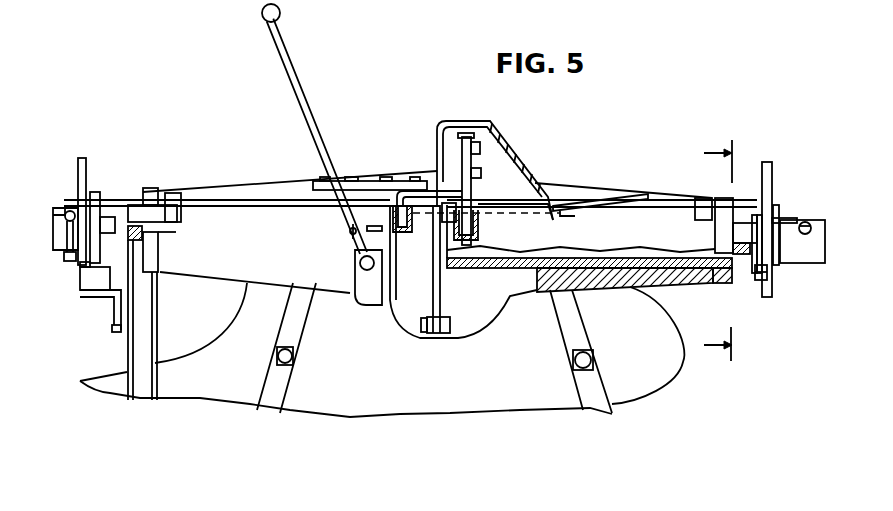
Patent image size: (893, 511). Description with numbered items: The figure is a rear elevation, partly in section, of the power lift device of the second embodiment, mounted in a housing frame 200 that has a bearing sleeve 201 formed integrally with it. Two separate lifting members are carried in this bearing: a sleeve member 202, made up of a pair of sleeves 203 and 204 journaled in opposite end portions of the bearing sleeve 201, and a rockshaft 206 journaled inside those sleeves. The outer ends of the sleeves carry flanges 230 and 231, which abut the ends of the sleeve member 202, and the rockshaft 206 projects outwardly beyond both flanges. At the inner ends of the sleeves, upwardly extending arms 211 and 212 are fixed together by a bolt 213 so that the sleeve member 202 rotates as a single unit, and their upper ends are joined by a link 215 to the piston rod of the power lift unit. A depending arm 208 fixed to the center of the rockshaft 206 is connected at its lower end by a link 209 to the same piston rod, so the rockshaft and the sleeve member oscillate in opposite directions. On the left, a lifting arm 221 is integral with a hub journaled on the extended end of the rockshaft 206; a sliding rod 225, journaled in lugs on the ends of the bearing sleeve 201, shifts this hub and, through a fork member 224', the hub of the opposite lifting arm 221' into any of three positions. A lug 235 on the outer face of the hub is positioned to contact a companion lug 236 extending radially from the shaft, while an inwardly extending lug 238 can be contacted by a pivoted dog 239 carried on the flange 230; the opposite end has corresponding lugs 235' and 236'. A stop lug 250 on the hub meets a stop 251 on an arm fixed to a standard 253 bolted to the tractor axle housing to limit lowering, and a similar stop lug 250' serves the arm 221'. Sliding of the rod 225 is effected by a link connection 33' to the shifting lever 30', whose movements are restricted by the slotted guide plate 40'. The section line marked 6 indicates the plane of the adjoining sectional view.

The shifting lever 30' is at (322, 154).
The guide plate 40' is at (370, 166).
The bearing sleeve 201 is at (246, 186).
The sliding rod 225 is at (231, 208).
The link 215 is at (452, 124).
The upwardly extending arm 211 is at (465, 135).
The upwardly extending arm 212 is at (471, 160).
The bolt 213 is at (482, 173).
The sleeve 203 is at (402, 252).
The sleeve member 202 is at (510, 199).
The link connection 33' is at (600, 216).
The link 209 is at (443, 316).
The depending arm 208 is at (431, 310).
The sleeve 204 is at (528, 290).
The flange 231 is at (723, 283).
The fork member 224' is at (752, 269).
The lifting arm 221' is at (752, 219).
The lug 235' is at (794, 207).
The rockshaft 206 is at (788, 251).
The lug 236' is at (812, 205).
The stop lug 250' is at (784, 288).
The section line 6 is at (713, 248).
The pivoted dog 239 is at (135, 206).
The flange 230 is at (150, 263).
The lug 238 is at (108, 220).
The lifting arm 221 is at (93, 197).
The lug 235 is at (61, 206).
The lug 236 is at (59, 242).
The stop lug 250 is at (77, 284).
The stop 251 is at (93, 299).
The standard 253 is at (117, 320).
The housing frame 200 is at (334, 398).